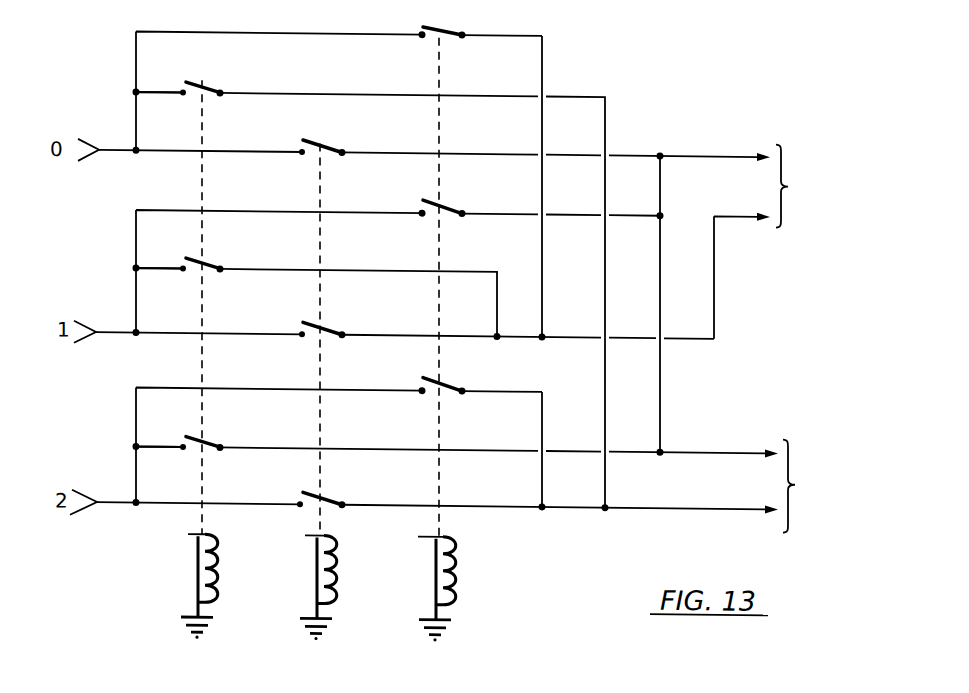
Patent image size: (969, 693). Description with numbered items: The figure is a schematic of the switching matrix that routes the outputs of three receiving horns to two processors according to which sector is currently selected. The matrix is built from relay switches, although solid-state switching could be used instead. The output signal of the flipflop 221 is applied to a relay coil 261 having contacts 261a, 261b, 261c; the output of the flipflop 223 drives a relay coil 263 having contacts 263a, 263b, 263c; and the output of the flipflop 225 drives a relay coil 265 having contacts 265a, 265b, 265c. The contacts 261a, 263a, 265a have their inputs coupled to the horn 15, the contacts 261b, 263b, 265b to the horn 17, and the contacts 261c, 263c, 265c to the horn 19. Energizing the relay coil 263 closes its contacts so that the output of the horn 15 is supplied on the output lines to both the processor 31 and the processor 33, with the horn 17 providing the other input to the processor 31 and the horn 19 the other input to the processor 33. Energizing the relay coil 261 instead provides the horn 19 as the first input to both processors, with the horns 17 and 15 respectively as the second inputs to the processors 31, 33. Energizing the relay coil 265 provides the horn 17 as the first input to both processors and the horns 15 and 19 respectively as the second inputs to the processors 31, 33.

The horn 15 is at (90, 139).
The horn 17 is at (88, 329).
The horn 19 is at (90, 494).
The contact 261a is at (207, 86).
The contact 261b is at (208, 262).
The contact 261c is at (210, 438).
The contact 263a is at (338, 143).
The contact 263b is at (330, 323).
The contact 263c is at (338, 496).
The contact 265a is at (455, 23).
The contact 265b is at (448, 202).
The contact 265c is at (450, 381).
The relay coil 261 is at (215, 592).
The relay coil 263 is at (337, 591).
The relay coil 265 is at (455, 592).
The flipflop 221 is at (165, 550).
The flipflop 223 is at (283, 550).
The flipflop 225 is at (400, 550).
The processor 31 is at (829, 187).
The processor 33 is at (836, 487).